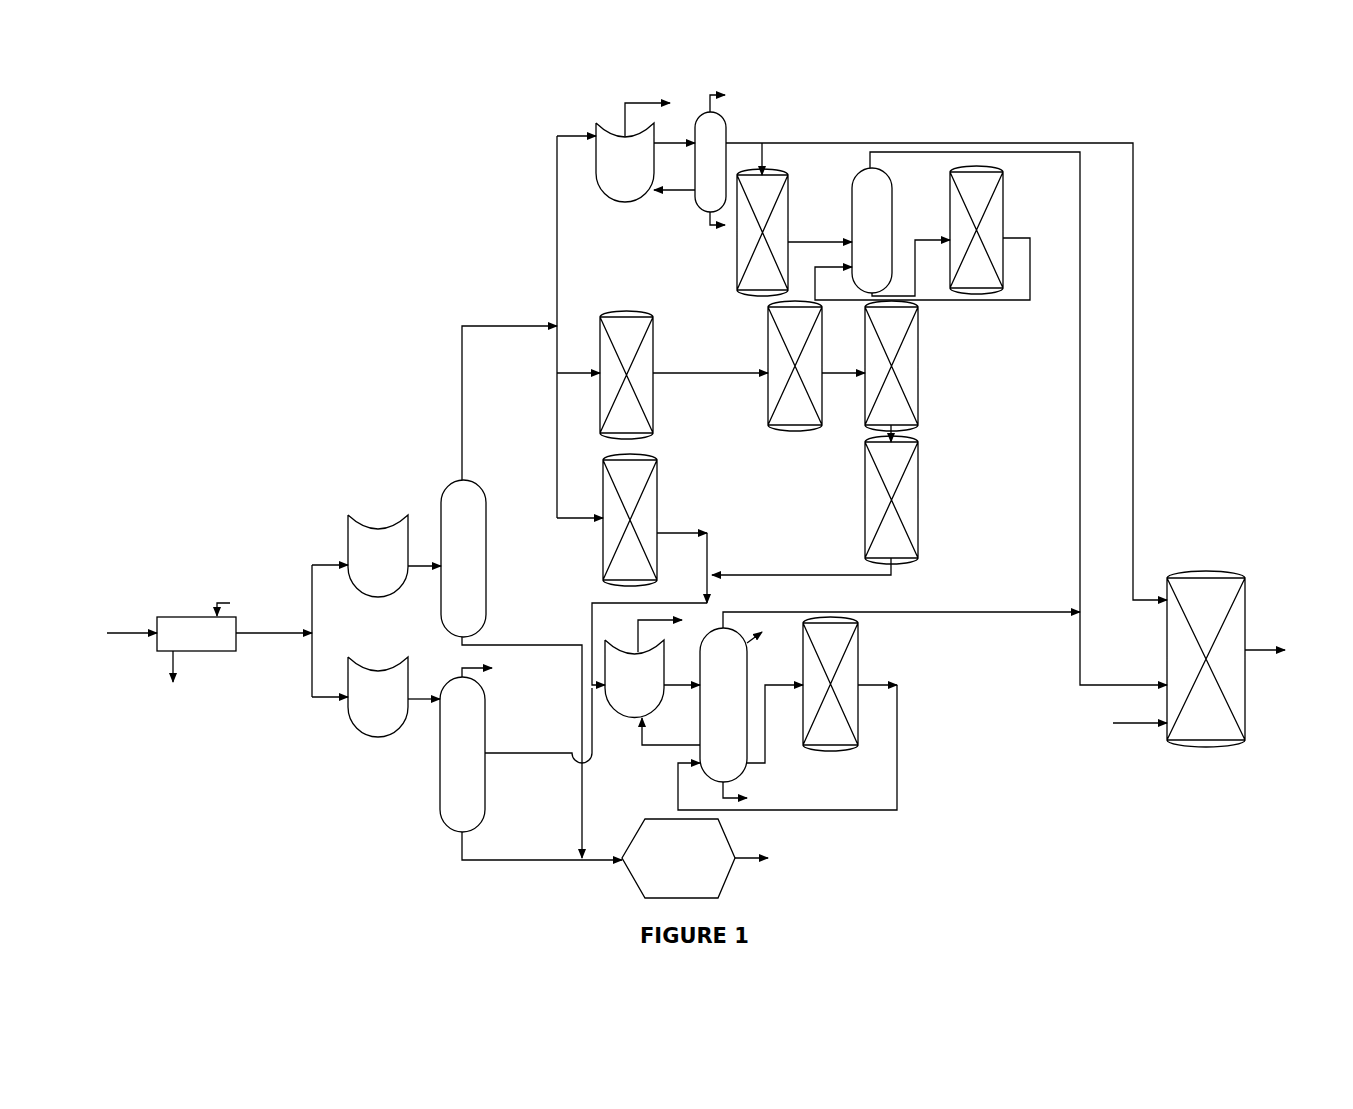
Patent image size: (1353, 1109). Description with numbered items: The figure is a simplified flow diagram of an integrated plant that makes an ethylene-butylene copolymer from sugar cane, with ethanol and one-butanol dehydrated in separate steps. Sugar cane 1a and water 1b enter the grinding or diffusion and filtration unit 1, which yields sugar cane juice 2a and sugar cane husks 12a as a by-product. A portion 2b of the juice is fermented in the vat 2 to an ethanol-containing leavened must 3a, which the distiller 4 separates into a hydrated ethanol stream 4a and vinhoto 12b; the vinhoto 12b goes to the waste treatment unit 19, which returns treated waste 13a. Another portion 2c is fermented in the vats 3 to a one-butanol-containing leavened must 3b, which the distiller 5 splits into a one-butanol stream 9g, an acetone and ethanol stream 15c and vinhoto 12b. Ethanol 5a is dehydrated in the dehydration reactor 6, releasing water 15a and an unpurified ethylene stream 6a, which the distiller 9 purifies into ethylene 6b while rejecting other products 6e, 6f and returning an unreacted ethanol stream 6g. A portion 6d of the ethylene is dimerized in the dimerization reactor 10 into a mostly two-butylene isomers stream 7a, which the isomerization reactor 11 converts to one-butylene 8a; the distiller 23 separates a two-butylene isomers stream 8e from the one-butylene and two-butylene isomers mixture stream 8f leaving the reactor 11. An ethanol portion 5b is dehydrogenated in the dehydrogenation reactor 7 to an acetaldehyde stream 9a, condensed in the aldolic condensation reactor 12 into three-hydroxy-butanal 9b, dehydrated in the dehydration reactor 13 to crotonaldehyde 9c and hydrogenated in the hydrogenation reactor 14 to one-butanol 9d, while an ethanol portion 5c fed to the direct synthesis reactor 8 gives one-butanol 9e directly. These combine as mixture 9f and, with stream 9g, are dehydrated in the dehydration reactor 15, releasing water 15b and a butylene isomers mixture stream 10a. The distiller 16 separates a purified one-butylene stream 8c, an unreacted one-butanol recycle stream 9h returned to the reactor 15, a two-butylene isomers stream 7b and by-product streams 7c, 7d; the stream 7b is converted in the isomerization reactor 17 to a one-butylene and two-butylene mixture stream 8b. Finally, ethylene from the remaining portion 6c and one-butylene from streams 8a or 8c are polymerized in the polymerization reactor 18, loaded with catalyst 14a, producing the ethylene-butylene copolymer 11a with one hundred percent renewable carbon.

The grinding or diffusion and filtration unit 1 is at (178, 615).
The sugar cane 1a is at (132, 620).
The water 1b is at (237, 598).
The sugar cane husks 12a is at (183, 680).
The vat 2 is at (348, 537).
The sugar cane juice 2a is at (274, 631).
The sugar cane juice stream 2b is at (324, 553).
The sugar cane juice stream 2c is at (324, 712).
The vats 3 is at (350, 722).
The leavened must 3a is at (424, 547).
The leavened must 3b is at (424, 686).
The distiller 4 is at (440, 497).
The ethanol stream 4a is at (509, 403).
The distiller 5 is at (442, 823).
The ethanol stream 5a is at (576, 314).
The ethanol stream 5b is at (578, 360).
The ethanol stream 5c is at (580, 505).
The dehydration reactor 6 is at (596, 162).
The ethylene stream 6a is at (674, 131).
The ethylene stream 6b is at (813, 131).
The ethylene stream 6c is at (995, 359).
The ethylene stream 6d is at (778, 159).
The other products 6e is at (717, 91).
The other products 6f is at (713, 233).
The unreacted ethanol stream 6g is at (674, 177).
The dehydrogenation reactor 7 is at (600, 312).
The 2-butylene isomers stream 7a is at (820, 230).
The 2-butylene isomers stream 7b is at (775, 712).
The other products 7c is at (766, 631).
The other products 7d is at (749, 796).
The direct synthesis reactor 8 is at (603, 463).
The 1-butylene stream 8a is at (1021, 418).
The 1-butylene and 2-butylene isomers mixture stream 8b is at (787, 747).
The 1-butylene stream 8c is at (901, 608).
The 2-butylene isomers stream 8e is at (911, 257).
The 1-butylene and 2-butylene isomers mixture stream 8f is at (922, 269).
The distiller 9 is at (722, 117).
The acetaldehyde stream 9a is at (710, 360).
The 3-hydroxy-butanal stream 9b is at (843, 360).
The crotonaldehyde stream 9c is at (917, 433).
The 1-butanol stream 9d is at (817, 574).
The 1-butanol stream 9e is at (682, 556).
The 1-butanol stream 9f is at (649, 633).
The 1-butanol stream 9g is at (538, 725).
The unreacted 1-butanol stream 9h is at (671, 734).
The dimerization reactor 10 is at (788, 188).
The butylene isomers mixture stream 10a is at (684, 673).
The isomerization reactor 11 is at (1003, 177).
The ethylene-1-butylene copolymer 11a is at (1267, 636).
The aldolic condensation reactor 12 is at (768, 400).
The vinhoto 12b is at (542, 738).
The dehydration reactor 13 is at (865, 382).
The treated waste 13a is at (771, 848).
The hydrogenation reactor 14 is at (865, 513).
The catalyst 14a is at (1120, 723).
The dehydration reactor 15 is at (633, 723).
The water 15a is at (668, 114).
The water 15b is at (681, 630).
The acetone and ethanol stream 15c is at (498, 671).
The distiller 16 is at (700, 750).
The isomerization reactor 17 is at (858, 647).
The polymerization reactor 18 is at (1243, 578).
The waste treatment unit 19 is at (723, 835).
The distiller 23 is at (892, 182).